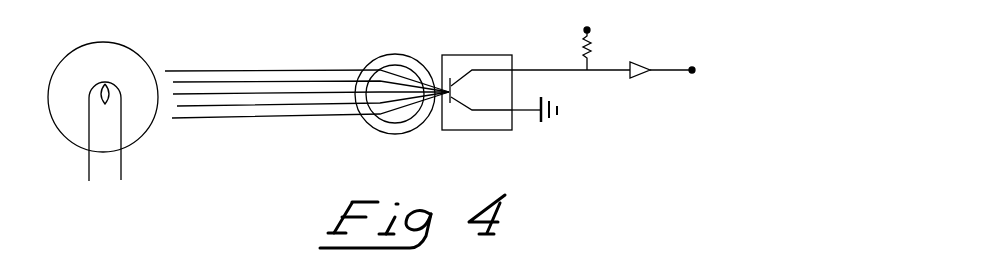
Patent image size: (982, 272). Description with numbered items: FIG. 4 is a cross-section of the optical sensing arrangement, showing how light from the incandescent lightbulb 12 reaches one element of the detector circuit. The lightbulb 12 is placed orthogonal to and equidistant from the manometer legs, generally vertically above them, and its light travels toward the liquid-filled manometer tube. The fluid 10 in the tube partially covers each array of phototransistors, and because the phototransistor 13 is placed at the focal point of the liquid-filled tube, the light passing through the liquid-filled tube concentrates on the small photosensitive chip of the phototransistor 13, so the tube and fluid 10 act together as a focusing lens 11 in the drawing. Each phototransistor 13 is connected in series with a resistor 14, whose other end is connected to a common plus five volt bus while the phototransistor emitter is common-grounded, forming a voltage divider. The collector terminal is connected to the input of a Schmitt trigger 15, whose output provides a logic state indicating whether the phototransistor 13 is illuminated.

The fluid 10 is at (378, 107).
The lens 11 is at (377, 58).
The lightbulb 12 is at (136, 51).
The phototransistor 13 is at (483, 78).
The resistor 14 is at (584, 47).
The Schmitt trigger 15 is at (638, 60).